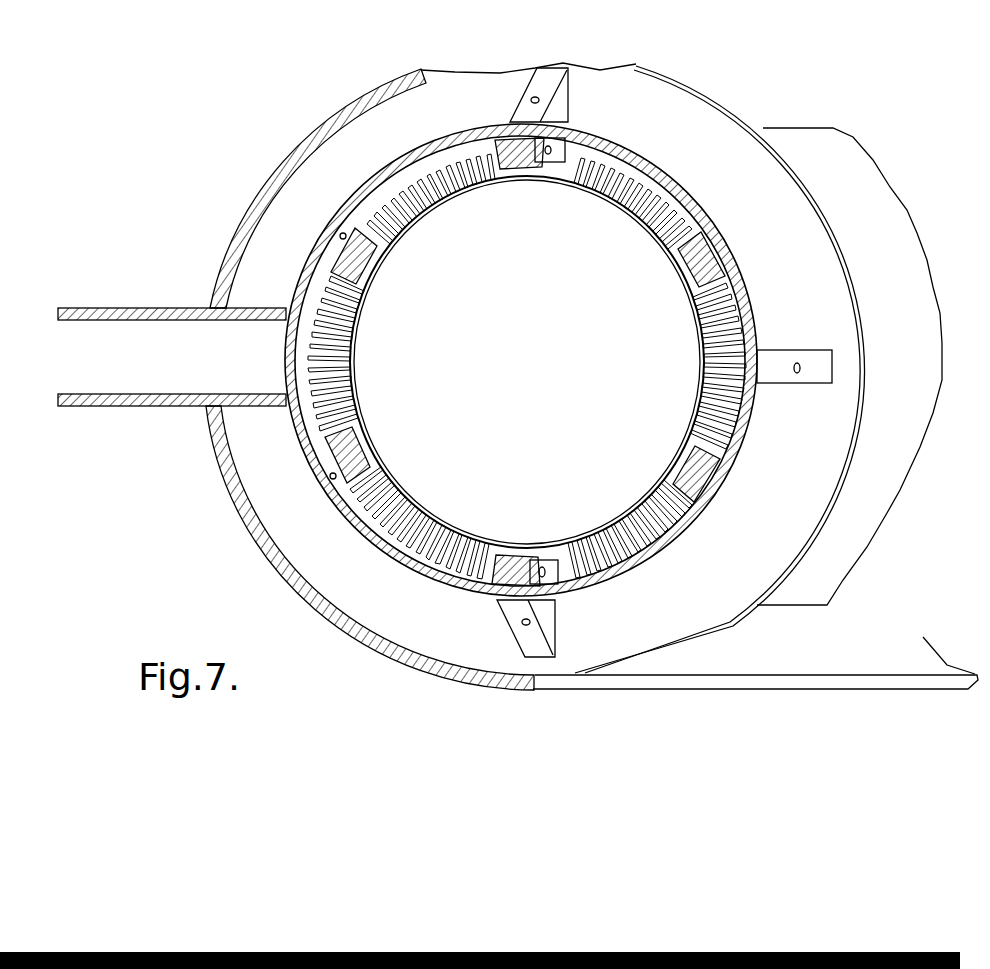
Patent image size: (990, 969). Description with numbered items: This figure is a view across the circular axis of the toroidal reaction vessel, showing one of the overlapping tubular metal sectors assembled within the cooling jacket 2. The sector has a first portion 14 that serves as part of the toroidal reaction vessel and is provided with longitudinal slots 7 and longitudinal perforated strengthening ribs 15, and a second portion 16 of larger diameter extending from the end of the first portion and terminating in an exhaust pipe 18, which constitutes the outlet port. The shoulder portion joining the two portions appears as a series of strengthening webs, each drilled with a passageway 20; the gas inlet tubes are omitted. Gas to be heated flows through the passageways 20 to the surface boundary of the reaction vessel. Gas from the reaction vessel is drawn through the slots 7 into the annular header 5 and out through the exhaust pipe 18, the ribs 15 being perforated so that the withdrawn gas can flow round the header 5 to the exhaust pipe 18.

The cooling jacket 2 is at (212, 440).
The annular header 5 is at (362, 525).
The slots 7 is at (450, 186).
The first portion 14 is at (378, 252).
The strengthening ribs 15 is at (505, 140).
The second portion 16 is at (380, 172).
The exhaust pipe 18 is at (100, 308).
The inlet passages 20 is at (533, 97).